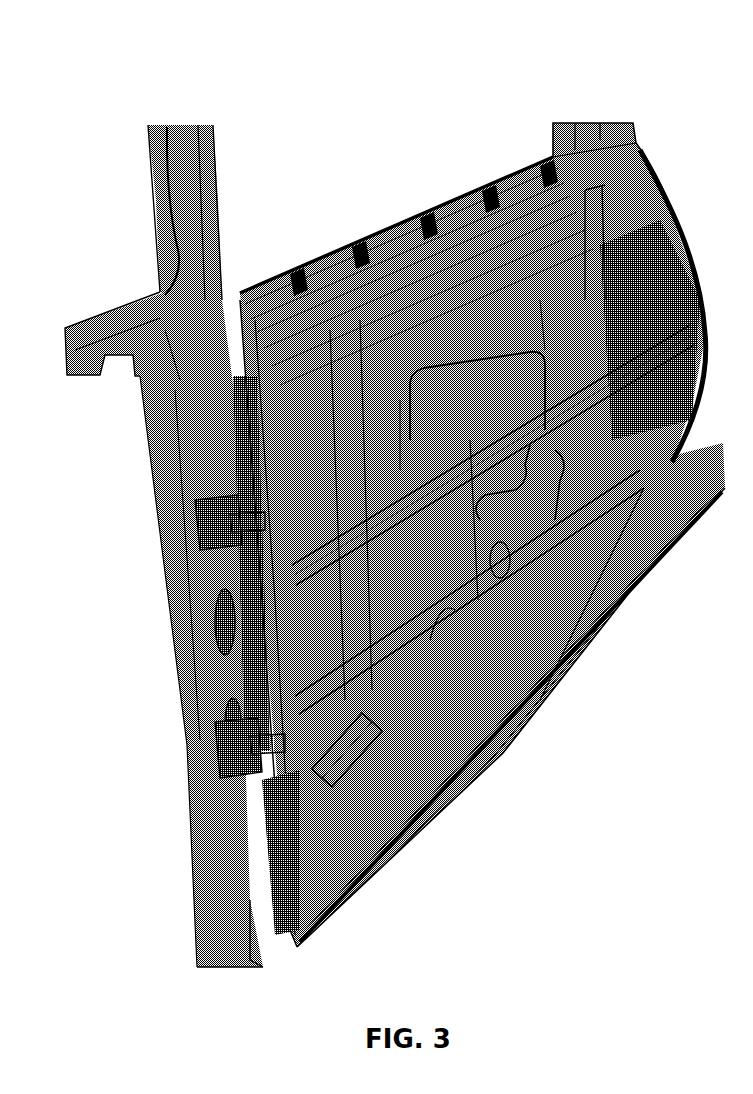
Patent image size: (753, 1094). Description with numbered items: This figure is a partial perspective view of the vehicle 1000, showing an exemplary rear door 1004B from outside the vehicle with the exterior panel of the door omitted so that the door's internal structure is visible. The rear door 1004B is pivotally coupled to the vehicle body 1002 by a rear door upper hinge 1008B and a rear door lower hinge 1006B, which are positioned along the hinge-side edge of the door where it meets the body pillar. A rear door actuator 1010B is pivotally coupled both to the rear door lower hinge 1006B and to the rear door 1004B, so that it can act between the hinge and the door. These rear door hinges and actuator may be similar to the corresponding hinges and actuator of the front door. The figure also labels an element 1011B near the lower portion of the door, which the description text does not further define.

The vehicle 1000 is at (248, 100).
The vehicle body 1002 is at (183, 250).
The rear door 1004B is at (513, 698).
The rear door lower hinge 1006B is at (228, 749).
The rear door upper hinge 1008B is at (217, 522).
The rear door actuator 1010B is at (397, 847).
The actuator cylinder 1011B is at (357, 735).